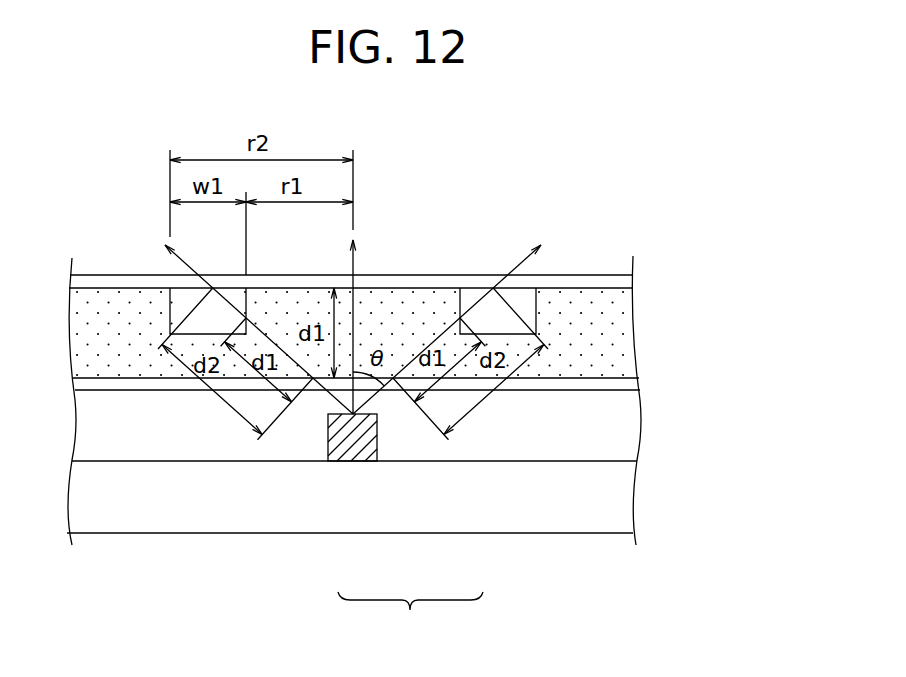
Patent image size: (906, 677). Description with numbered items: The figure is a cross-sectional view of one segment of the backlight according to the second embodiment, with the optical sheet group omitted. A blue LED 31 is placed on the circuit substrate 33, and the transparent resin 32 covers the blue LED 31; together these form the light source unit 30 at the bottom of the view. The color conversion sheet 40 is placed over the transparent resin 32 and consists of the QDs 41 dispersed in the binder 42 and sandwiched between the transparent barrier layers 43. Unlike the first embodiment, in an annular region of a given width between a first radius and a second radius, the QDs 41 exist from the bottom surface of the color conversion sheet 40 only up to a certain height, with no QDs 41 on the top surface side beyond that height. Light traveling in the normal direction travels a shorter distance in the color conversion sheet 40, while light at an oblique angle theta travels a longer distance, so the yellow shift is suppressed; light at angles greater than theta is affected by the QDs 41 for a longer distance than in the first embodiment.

The light source unit 30 is at (410, 616).
The blue LED 31 is at (360, 450).
The transparent resin 32 is at (408, 449).
The circuit substrate 33 is at (455, 520).
The color conversion sheet 40 is at (700, 262).
The QDs 41 is at (606, 352).
The binder 42 is at (608, 318).
The transparent barrier layers 43 is at (622, 384).